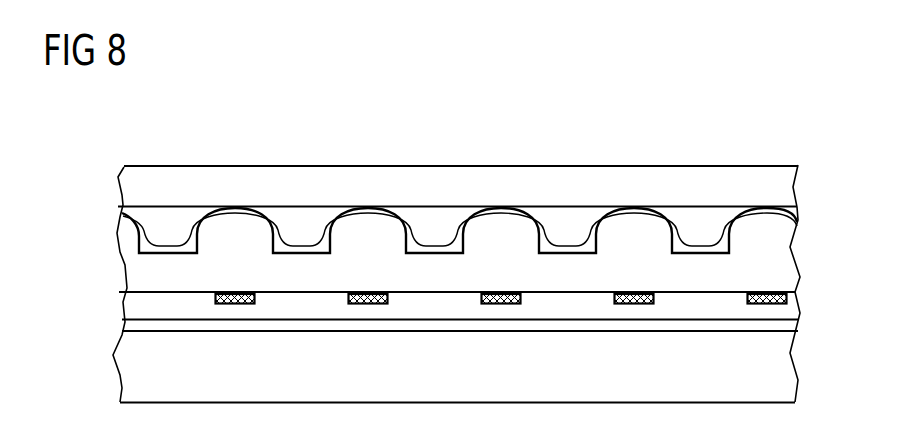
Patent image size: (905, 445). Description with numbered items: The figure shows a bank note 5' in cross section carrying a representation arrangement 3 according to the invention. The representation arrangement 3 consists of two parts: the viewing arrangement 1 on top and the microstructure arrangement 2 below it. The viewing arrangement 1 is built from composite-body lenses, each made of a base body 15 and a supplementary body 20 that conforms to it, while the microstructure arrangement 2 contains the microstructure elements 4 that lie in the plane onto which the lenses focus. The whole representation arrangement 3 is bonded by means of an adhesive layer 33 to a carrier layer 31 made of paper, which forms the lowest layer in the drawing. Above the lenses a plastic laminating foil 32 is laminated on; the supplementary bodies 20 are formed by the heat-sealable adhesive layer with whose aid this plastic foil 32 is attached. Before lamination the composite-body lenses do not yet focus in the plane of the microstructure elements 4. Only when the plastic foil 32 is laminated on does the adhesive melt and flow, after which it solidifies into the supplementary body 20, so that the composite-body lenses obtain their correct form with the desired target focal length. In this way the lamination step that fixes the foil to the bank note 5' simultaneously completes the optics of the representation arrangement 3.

The bank note 5' is at (431, 245).
The representation arrangement 3 is at (73, 212).
The viewing arrangement 1 is at (105, 212).
The microstructure arrangement 2 is at (105, 297).
The supplementary bodies 20 is at (322, 243).
The base bodies 15 is at (657, 228).
The plastic laminating foil 32 is at (783, 187).
The microstructure elements 4 is at (773, 292).
The adhesive layer 33 is at (787, 325).
The carrier layer 31 is at (783, 368).